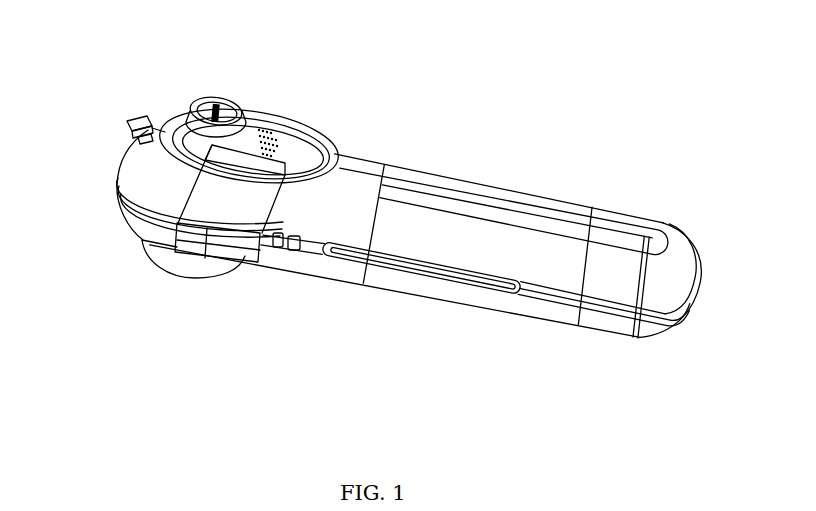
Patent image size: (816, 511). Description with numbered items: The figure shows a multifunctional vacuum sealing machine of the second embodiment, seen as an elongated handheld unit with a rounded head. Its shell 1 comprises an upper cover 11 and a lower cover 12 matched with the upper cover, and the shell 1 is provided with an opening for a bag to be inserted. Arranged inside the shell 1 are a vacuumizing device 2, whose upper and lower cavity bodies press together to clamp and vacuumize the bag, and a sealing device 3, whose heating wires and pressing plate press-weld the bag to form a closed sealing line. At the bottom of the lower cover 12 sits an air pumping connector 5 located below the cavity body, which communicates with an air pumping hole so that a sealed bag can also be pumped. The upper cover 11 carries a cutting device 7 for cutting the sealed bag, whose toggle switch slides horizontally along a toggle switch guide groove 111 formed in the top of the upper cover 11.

The shell 1 is at (385, 273).
The upper cover 11 is at (523, 220).
The lower cover 12 is at (483, 297).
The vacuumizing device 2 is at (230, 117).
The sealing device 3 is at (298, 153).
The air pumping connector 5 is at (178, 267).
The cutting device 7 is at (127, 122).
The toggle switch guide groove 111 is at (148, 120).